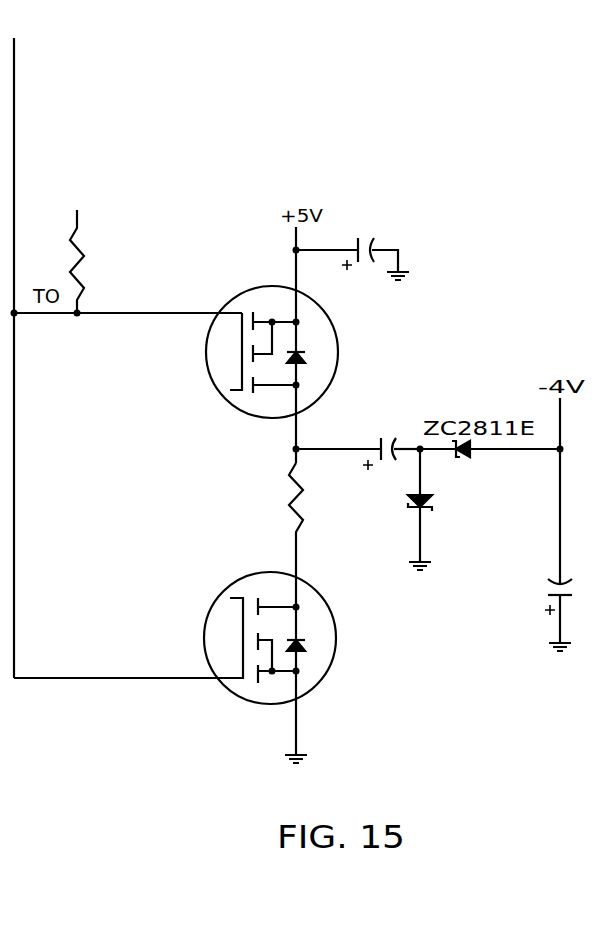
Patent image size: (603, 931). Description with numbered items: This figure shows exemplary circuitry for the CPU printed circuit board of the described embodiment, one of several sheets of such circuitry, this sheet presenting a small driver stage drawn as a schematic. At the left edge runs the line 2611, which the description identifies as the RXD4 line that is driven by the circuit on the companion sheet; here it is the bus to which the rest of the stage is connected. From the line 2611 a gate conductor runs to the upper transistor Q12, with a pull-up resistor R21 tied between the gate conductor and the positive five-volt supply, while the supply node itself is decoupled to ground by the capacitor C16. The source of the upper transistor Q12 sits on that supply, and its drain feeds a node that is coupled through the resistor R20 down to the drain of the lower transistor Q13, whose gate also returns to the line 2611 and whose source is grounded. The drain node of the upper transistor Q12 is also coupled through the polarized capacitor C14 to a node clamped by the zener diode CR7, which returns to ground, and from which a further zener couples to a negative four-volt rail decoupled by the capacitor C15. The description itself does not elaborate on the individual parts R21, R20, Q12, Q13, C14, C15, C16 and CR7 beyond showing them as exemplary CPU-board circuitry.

The line (RXD4) 2611 is at (14, 110).
The resistor R21 is at (122, 248).
The resistor R20 is at (246, 535).
The transistor Q12 is at (324, 355).
The transistor Q13 is at (230, 659).
The capacitor C14 is at (358, 419).
The capacitor C15 is at (526, 550).
The capacitor C16 is at (352, 224).
The zener diode CR7 is at (479, 509).